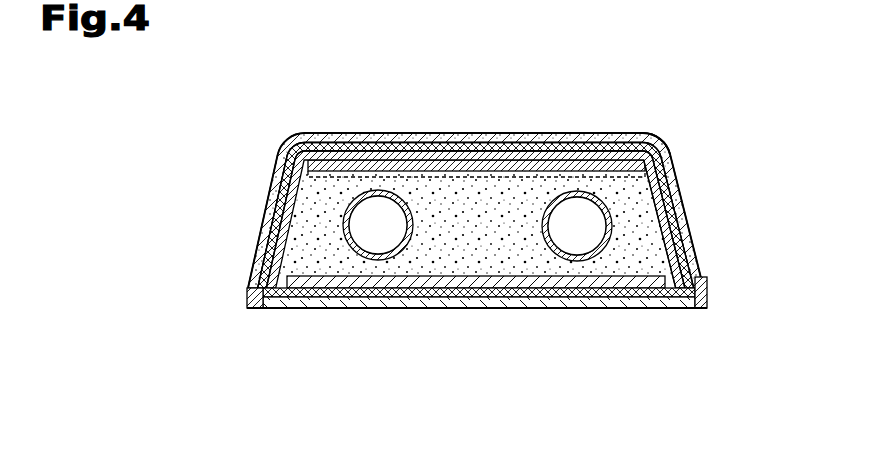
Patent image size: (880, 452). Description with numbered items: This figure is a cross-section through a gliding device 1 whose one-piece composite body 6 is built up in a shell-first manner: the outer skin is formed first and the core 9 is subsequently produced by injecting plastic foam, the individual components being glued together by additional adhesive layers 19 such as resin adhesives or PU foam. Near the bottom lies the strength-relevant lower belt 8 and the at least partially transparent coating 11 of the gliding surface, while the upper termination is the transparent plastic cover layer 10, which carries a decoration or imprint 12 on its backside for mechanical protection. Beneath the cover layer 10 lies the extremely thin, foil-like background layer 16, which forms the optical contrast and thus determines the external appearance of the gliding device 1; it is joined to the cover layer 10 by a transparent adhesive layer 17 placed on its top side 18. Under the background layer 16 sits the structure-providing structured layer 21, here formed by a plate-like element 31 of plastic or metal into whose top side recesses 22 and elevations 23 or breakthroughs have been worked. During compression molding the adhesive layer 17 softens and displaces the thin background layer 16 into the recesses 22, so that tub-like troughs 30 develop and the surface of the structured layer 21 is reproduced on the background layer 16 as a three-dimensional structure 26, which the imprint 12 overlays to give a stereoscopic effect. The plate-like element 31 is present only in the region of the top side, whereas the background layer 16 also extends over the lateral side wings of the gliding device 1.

The gliding device 1 is at (690, 103).
The composite body 6 is at (705, 216).
The lower belt 8 is at (455, 300).
The core 9 is at (287, 225).
The cover layer 10 is at (477, 133).
The coating of the gliding surface 11 is at (383, 309).
The imprint 12 is at (336, 134).
The background layer 16 is at (405, 146).
The adhesive layer 17 is at (610, 140).
The top side of the background layer 18 is at (490, 140).
The adhesive layers 19 is at (320, 309).
The structured layer 21 is at (447, 160).
The recesses 22 is at (588, 140).
The elevations 23 is at (373, 143).
The three-dimensional structure 26 is at (548, 143).
The troughs 30 is at (567, 150).
The plate-like element 31 is at (662, 157).